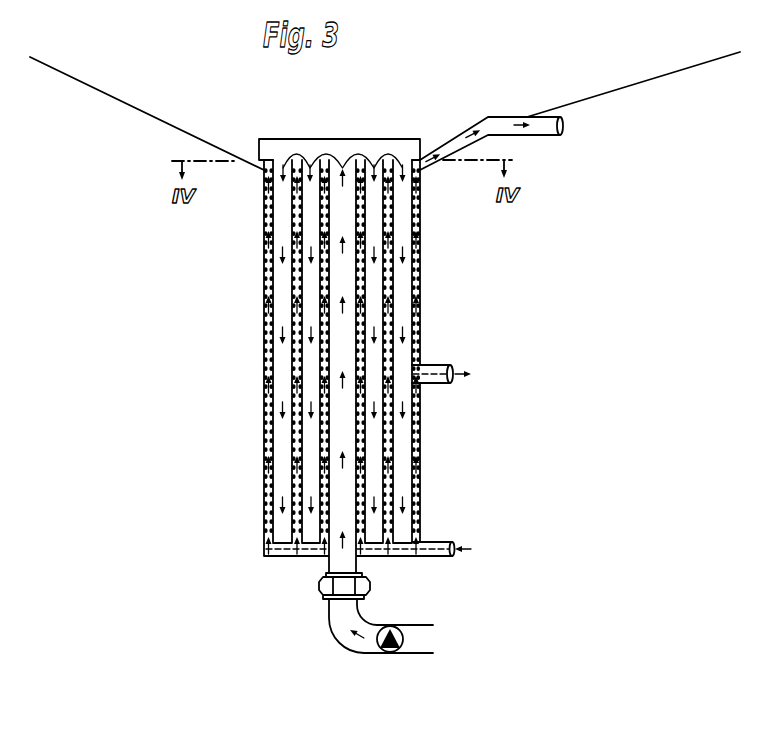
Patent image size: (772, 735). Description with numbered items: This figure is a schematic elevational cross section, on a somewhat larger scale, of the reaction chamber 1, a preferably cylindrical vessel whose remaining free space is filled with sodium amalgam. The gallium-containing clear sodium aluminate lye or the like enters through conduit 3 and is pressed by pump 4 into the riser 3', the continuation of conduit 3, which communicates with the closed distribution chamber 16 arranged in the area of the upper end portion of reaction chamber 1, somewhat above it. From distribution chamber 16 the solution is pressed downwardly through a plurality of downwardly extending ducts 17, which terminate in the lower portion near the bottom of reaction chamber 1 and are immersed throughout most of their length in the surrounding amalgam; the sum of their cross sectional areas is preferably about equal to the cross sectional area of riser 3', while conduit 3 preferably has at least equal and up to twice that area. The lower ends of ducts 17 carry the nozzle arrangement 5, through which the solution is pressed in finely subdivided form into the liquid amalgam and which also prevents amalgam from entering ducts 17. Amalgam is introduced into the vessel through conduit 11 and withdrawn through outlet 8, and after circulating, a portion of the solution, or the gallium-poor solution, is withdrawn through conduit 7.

The reaction chamber 1 is at (265, 323).
The conduit 3 is at (363, 625).
The riser 3' is at (343, 322).
The pump 4 is at (390, 652).
The nozzle arrangement 5 is at (282, 543).
The conduit 7 is at (562, 134).
The outlet 8 is at (452, 366).
The conduit 11 is at (454, 542).
The distribution chamber 16 is at (383, 140).
The ducts 17 is at (400, 450).